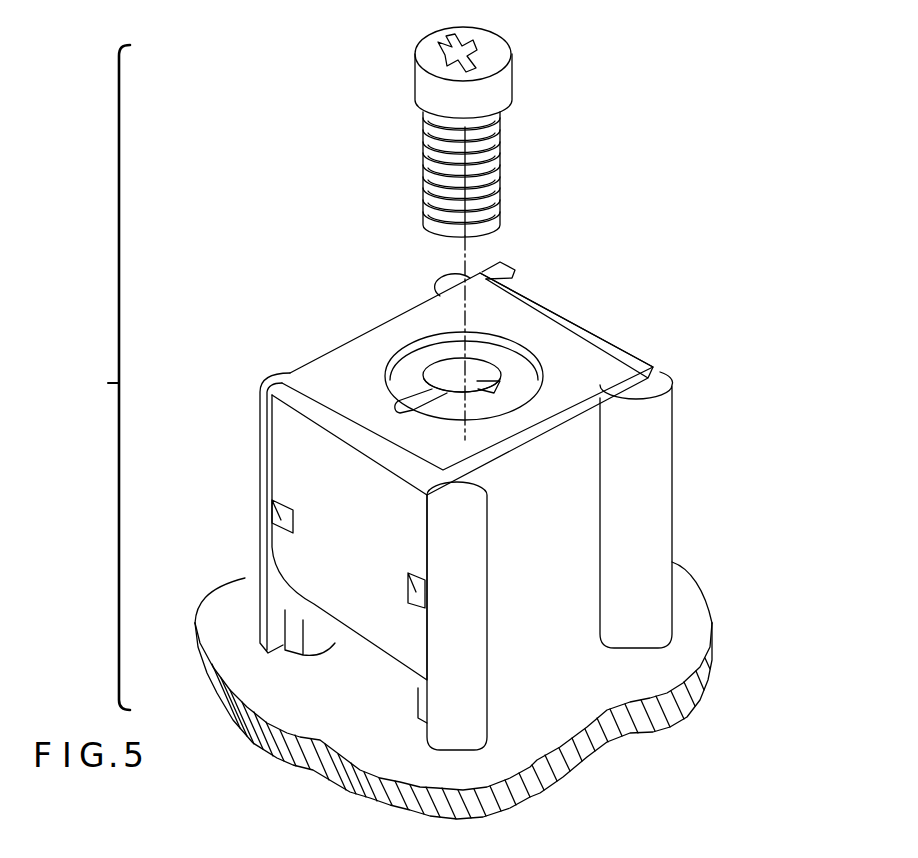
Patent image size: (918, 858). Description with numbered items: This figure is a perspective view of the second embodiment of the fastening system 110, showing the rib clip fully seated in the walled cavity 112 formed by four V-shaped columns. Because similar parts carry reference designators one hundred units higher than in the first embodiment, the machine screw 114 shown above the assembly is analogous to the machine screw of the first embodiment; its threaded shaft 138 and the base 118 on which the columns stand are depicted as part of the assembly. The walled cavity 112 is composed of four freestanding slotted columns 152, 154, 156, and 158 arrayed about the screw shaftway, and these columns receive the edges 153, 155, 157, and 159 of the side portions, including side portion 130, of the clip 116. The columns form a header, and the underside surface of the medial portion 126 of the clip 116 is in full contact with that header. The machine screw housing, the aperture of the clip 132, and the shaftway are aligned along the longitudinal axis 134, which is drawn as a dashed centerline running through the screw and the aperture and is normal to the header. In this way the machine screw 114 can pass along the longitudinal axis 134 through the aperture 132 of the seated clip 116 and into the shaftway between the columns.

The fastening system 110 is at (97, 377).
The walled cavity 112 is at (678, 516).
The machine screw 114 is at (510, 80).
The clip 116 is at (583, 322).
The base 118 is at (670, 665).
The medial portion 126 is at (352, 382).
The side portion 130 is at (290, 552).
The aperture of the clip 132 is at (428, 388).
The longitudinal axis 134 is at (457, 253).
The threaded shaft 138 is at (500, 170).
The slotted column 152 is at (655, 570).
The edge 153 is at (663, 378).
The slotted column 154 is at (440, 290).
The edge 155 is at (495, 268).
The slotted column 156 is at (262, 480).
The edge 157 is at (262, 420).
The slotted column 158 is at (472, 693).
The edge 159 is at (445, 478).